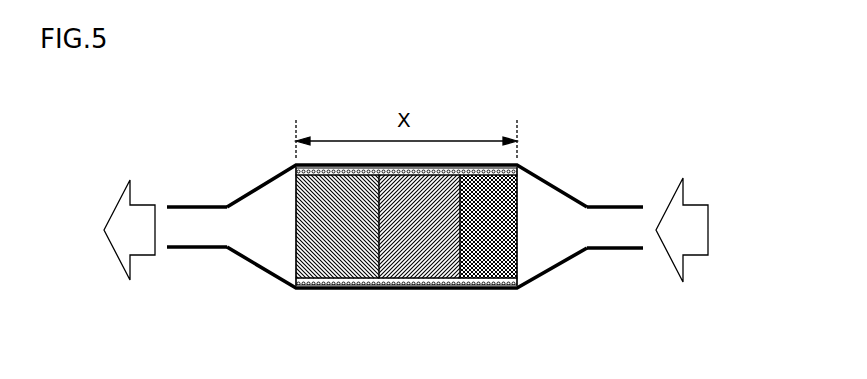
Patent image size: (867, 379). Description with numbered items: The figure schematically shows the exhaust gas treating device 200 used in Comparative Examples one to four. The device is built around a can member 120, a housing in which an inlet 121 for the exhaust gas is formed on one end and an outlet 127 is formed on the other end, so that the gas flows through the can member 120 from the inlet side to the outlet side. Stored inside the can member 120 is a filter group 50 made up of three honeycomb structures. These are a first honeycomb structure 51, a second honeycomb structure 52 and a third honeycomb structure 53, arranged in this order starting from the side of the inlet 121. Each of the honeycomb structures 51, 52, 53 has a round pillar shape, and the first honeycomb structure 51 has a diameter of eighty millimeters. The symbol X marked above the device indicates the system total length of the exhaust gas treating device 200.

The exhaust gas treating device 200 is at (676, 85).
The can member 120 is at (541, 177).
The inlet 121 is at (637, 227).
The outlet 127 is at (173, 222).
The filter group 50 is at (407, 271).
The first honeycomb structure 51 is at (492, 250).
The second honeycomb structure 52 is at (401, 242).
The third honeycomb structure 53 is at (316, 248).